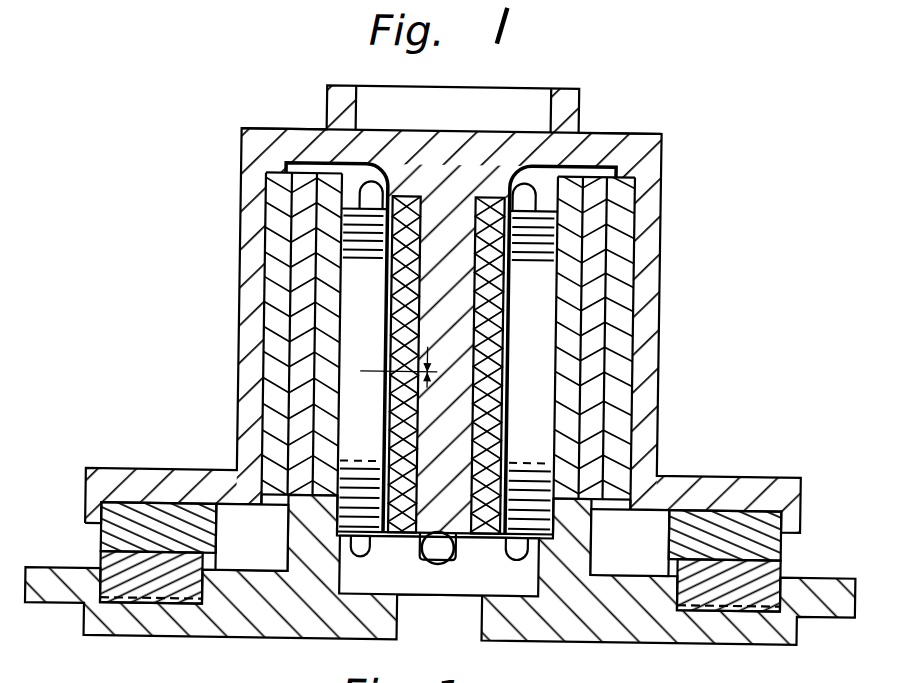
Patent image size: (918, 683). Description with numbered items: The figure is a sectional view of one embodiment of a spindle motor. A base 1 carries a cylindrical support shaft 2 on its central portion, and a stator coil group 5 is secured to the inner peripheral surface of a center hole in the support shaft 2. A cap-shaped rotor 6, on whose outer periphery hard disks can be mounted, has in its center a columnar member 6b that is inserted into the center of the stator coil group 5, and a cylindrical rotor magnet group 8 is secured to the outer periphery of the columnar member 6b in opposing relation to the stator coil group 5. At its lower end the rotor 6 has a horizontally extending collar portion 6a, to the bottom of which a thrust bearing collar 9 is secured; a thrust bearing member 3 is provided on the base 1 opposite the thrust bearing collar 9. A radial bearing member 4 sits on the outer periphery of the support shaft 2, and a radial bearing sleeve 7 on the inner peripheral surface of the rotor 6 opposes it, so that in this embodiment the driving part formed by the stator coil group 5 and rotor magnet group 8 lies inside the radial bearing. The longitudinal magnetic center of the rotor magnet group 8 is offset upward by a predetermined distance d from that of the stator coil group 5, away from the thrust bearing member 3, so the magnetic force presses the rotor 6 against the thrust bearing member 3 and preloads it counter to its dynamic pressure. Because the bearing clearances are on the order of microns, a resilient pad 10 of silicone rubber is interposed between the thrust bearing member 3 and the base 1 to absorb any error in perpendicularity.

The base 1 is at (724, 630).
The support shaft 2 is at (571, 253).
The thrust bearing member 3 is at (118, 572).
The radial bearing member 4 is at (591, 295).
The stator coil group 5 is at (654, 200).
The rotor 6 is at (619, 145).
The collar portion 6a is at (113, 478).
The columnar member 6b is at (504, 402).
The radial bearing sleeve 7 is at (616, 378).
The rotor magnet group 8 is at (504, 333).
The thrust bearing collar 9 is at (113, 527).
The resilient pad 10 is at (106, 605).
The predetermined distance d is at (404, 367).